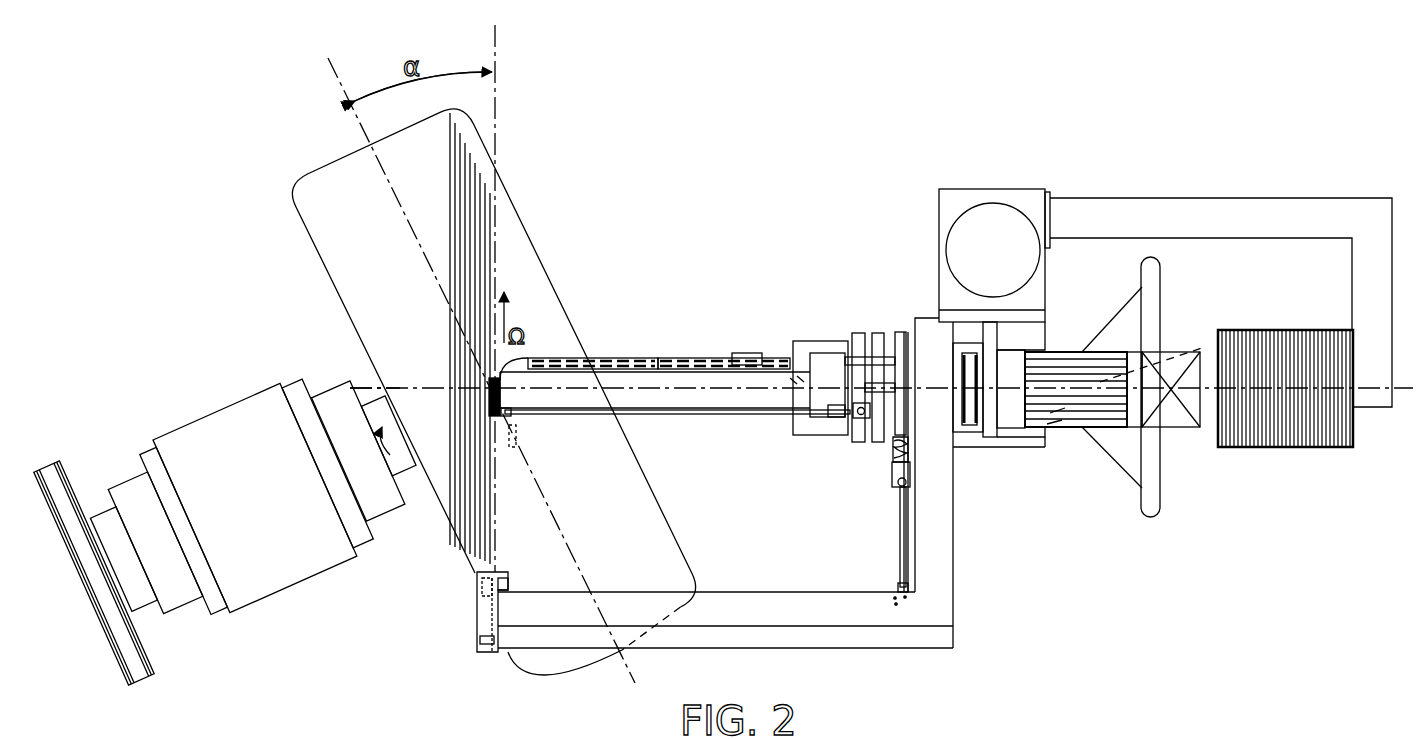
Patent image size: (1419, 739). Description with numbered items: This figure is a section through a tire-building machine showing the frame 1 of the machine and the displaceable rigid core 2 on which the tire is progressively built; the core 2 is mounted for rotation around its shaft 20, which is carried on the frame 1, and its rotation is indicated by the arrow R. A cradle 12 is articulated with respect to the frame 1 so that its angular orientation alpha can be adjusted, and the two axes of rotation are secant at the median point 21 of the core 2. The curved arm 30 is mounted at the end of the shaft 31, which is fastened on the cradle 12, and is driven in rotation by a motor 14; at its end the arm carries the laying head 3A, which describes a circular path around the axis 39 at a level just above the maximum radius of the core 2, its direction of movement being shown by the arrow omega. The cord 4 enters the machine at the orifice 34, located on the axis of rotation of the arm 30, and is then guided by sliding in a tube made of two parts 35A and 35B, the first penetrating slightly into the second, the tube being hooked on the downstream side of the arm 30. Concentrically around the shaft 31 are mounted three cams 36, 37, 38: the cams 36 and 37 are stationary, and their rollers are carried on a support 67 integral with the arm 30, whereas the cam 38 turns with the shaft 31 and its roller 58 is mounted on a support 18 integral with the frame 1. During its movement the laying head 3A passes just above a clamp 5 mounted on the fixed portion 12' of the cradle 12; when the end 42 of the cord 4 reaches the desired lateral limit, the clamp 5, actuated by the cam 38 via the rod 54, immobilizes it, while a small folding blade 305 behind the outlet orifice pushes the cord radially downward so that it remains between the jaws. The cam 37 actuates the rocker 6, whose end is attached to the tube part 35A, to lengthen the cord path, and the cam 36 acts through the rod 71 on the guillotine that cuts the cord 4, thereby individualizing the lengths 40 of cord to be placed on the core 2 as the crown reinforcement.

The frame 1 is at (192, 432).
The rigid core 2 is at (352, 208).
The laying head 3A is at (518, 420).
The cord 4 is at (1195, 350).
The clamp 5 is at (473, 574).
The rocker 6 is at (847, 350).
The cradle 12 is at (1153, 403).
The portion of the cradle 12' is at (760, 605).
The motor 14 is at (1057, 430).
The support 18 is at (910, 465).
The shaft 20 is at (398, 440).
The median point 21 is at (488, 390).
The curved arm 30 is at (665, 405).
The shaft 31 is at (907, 332).
The orifice 34 is at (1053, 383).
The tube part 35A is at (718, 356).
The tube part 35B is at (632, 356).
The cam 36 is at (857, 333).
The cam 37 is at (877, 333).
The cam 38 is at (898, 332).
The axis 39 is at (375, 386).
The length of cord 40 is at (450, 192).
The end of the cord 42 is at (497, 563).
The rod 54 is at (900, 557).
The roller 58 is at (890, 437).
The support 67 is at (832, 382).
The rod 71 is at (723, 410).
The folding blade 305 is at (516, 447).